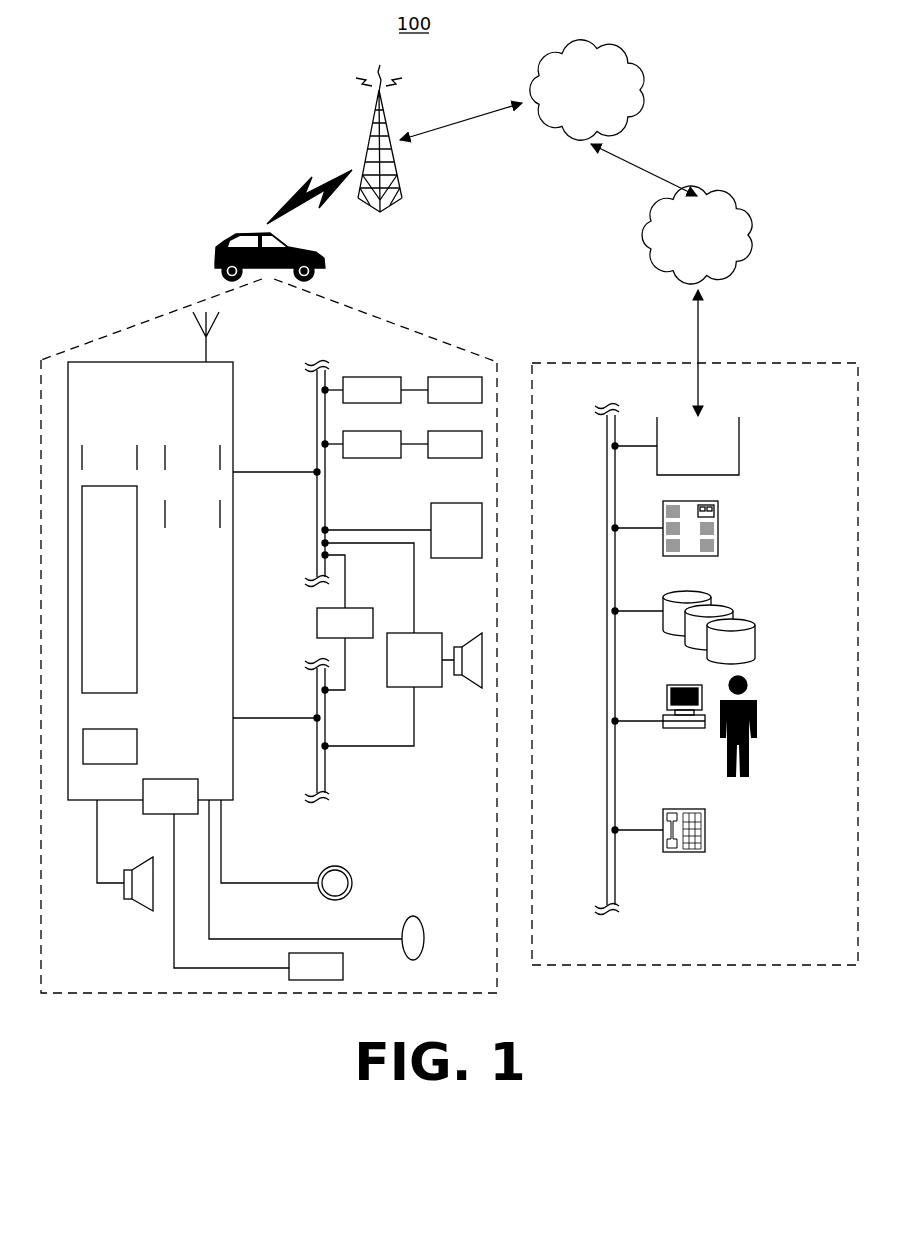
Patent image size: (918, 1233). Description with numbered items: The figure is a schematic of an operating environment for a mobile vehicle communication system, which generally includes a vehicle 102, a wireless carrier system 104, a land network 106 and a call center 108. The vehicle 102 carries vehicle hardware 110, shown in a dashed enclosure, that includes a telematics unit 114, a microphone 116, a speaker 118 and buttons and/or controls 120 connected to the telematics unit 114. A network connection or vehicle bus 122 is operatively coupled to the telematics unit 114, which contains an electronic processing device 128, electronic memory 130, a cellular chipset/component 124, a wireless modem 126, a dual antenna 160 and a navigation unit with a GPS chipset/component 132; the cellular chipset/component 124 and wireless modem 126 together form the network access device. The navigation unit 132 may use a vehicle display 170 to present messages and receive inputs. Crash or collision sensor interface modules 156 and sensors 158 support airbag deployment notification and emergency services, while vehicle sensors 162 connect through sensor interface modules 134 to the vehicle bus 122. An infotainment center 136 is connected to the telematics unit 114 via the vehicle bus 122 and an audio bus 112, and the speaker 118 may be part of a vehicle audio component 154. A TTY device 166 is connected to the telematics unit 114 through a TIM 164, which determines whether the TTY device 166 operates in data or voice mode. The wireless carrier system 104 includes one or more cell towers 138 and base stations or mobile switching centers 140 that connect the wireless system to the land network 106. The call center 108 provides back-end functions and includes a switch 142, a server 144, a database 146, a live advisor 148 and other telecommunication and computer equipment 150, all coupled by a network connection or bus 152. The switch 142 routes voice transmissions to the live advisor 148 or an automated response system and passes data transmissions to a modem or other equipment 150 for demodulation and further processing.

The vehicle 102 is at (218, 250).
The wireless carrier system 104 is at (498, 198).
The land network 106 is at (697, 235).
The call center 108 is at (698, 968).
The vehicle hardware 110 is at (233, 993).
The audio bus 112 is at (317, 768).
The telematics unit 114 is at (235, 660).
The microphone 116 is at (415, 916).
The speaker 118 is at (137, 905).
The buttons and/or controls 120 is at (333, 866).
The vehicle bus 122 is at (325, 515).
The cellular chipset/component 124 is at (109, 457).
The wireless modem 126 is at (192, 457).
The electronic processing device 128 is at (109, 589).
The electronic memory 130 is at (110, 746).
The GPS chipset/component 132 is at (192, 514).
The sensor interface modules 134 is at (363, 444).
The infotainment center 136 is at (345, 649).
The cell tower 138 is at (385, 112).
The base stations and/or mobile switching centers 140 is at (587, 90).
The switch 142 is at (677, 446).
The server 144 is at (718, 518).
The database 146 is at (760, 625).
The live advisor 148 is at (755, 695).
The telecommunication and computer equipment 150 is at (705, 820).
The network connection or bus 152 is at (607, 660).
The vehicle audio component 154 is at (403, 689).
The crash and/or collision sensor interface modules 156 is at (363, 390).
The sensors 158 is at (441, 390).
The dual antenna 160 is at (208, 356).
The vehicle sensors 162 is at (441, 444).
The TIM 164 is at (170, 796).
The TTY device 166 is at (258, 897).
The vehicle display 170 is at (403, 530).